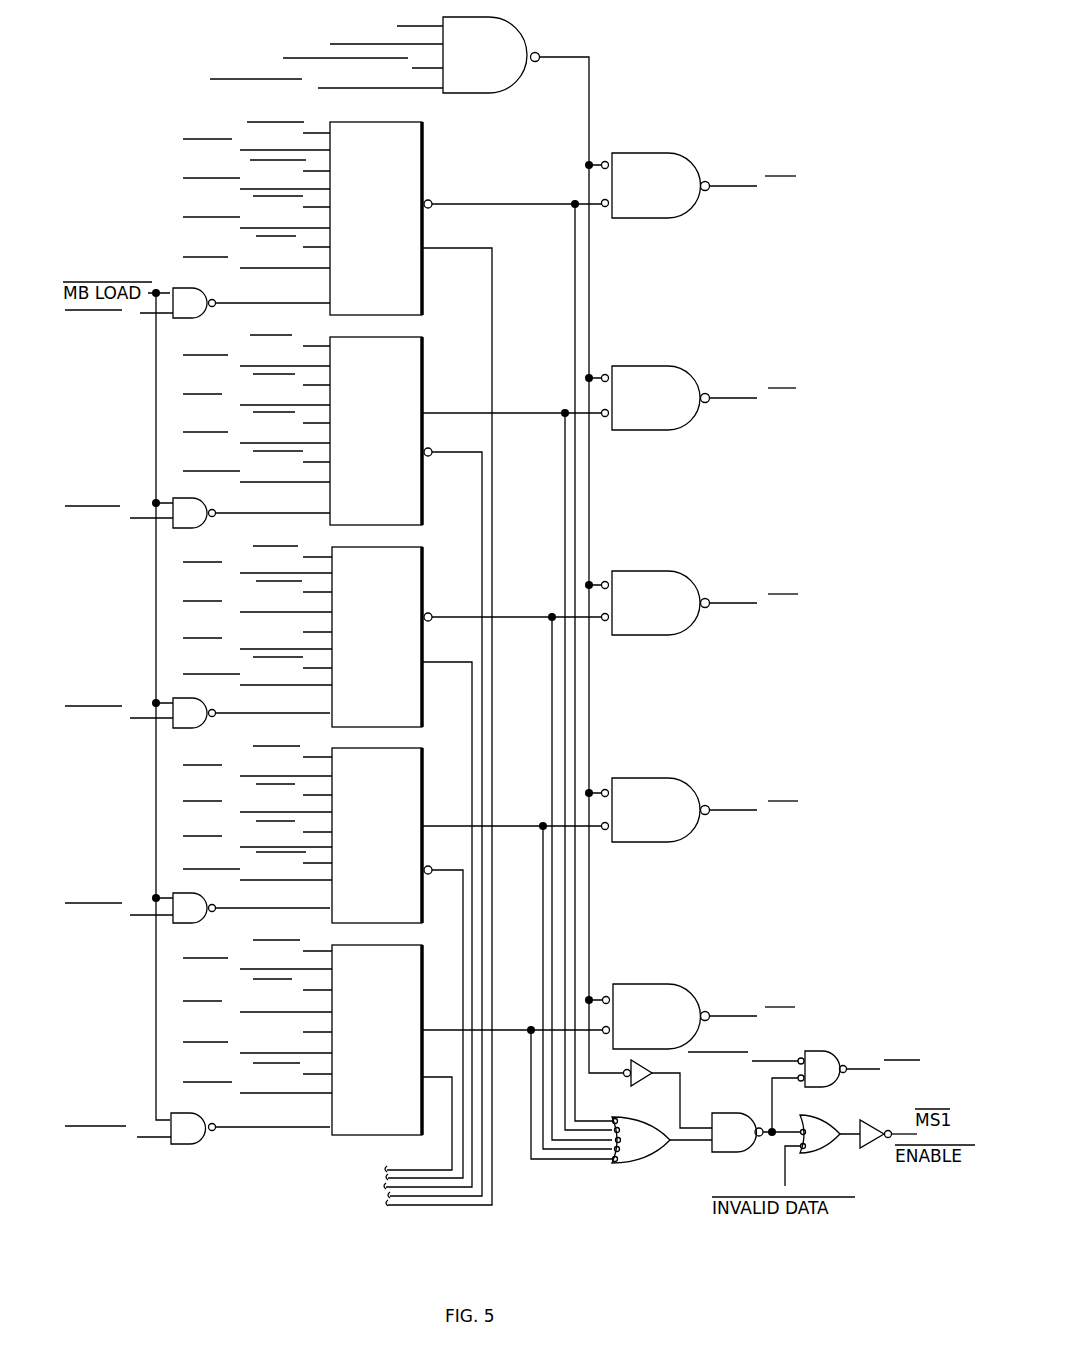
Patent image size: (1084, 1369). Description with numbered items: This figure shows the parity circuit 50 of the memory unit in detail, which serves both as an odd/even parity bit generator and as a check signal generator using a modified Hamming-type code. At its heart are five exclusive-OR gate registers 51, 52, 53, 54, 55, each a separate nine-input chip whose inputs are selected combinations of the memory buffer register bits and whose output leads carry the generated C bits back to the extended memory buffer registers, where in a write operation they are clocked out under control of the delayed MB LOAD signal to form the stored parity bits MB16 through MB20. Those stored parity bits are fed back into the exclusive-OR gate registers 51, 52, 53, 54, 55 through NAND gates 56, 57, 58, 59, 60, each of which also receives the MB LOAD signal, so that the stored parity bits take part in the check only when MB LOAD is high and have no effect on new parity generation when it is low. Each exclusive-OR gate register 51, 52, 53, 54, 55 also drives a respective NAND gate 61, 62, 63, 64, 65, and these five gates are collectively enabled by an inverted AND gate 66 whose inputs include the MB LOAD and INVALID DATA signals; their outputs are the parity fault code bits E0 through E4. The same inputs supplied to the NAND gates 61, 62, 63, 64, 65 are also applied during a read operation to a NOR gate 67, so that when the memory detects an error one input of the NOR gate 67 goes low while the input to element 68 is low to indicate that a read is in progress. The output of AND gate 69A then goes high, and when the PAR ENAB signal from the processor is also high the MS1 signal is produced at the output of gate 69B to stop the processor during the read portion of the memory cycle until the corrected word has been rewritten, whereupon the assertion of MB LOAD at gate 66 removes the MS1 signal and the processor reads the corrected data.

The parity circuit 50 is at (300, 1240).
The exclusive-OR gate register 51 is at (388, 255).
The exclusive-OR gate register 52 is at (388, 481).
The exclusive-OR gate register 53 is at (389, 695).
The exclusive-OR gate register 54 is at (389, 898).
The exclusive-OR gate register 55 is at (392, 1055).
The NAND gate 56 is at (195, 310).
The NAND gate 57 is at (197, 521).
The NAND gate 58 is at (195, 721).
The NAND gate 59 is at (195, 916).
The NAND gate 60 is at (197, 1136).
The NAND gate 61 is at (665, 214).
The NAND gate 62 is at (657, 426).
The NAND gate 63 is at (650, 630).
The NAND gate 64 is at (663, 836).
The NAND gate 65 is at (672, 1024).
The inverted AND gate 66 is at (527, 40).
The NOR gate 67 is at (640, 1160).
The element 68 is at (668, 1094).
The AND gate 69A is at (728, 1118).
The gate 69B is at (828, 1060).